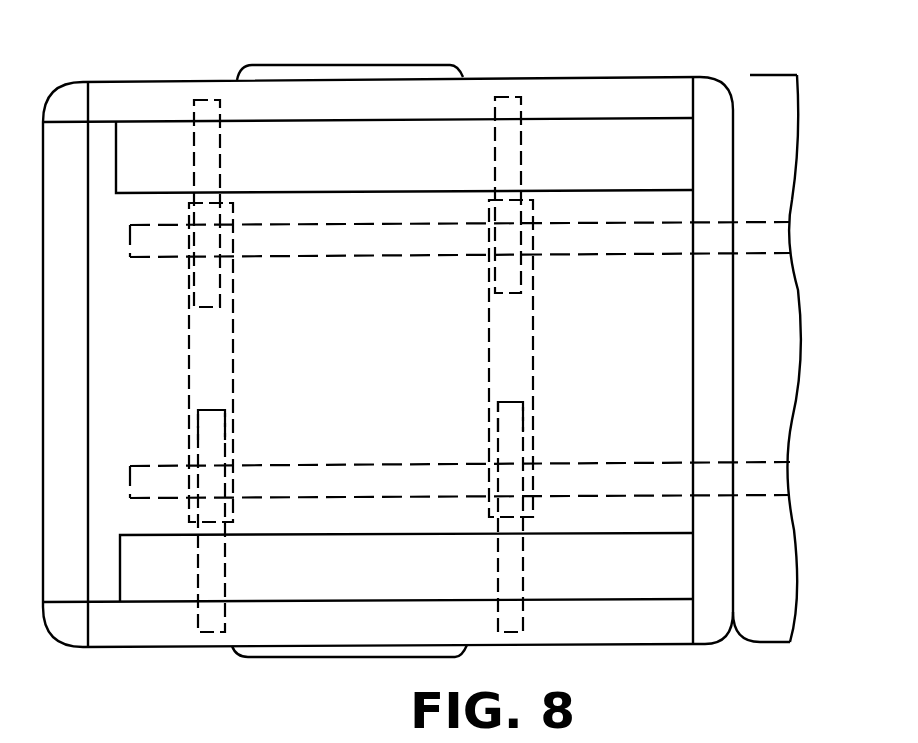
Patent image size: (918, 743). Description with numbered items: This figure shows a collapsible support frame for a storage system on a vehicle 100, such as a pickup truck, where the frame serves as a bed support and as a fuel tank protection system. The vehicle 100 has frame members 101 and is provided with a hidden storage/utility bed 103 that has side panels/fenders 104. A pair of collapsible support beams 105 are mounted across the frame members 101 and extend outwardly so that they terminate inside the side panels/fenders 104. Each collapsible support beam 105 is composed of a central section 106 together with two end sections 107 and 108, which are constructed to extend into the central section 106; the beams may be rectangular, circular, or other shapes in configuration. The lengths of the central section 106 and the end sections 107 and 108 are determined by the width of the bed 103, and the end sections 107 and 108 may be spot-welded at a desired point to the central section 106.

The vehicle 100 is at (753, 87).
The frame members 101 is at (458, 238).
The hidden storage/utility bed 103 is at (160, 367).
The side panels/fenders 104 is at (473, 98).
The collapsible support beams 105 is at (238, 362).
The central section 106 is at (208, 443).
The end section 107 is at (220, 581).
The end section 108 is at (203, 177).